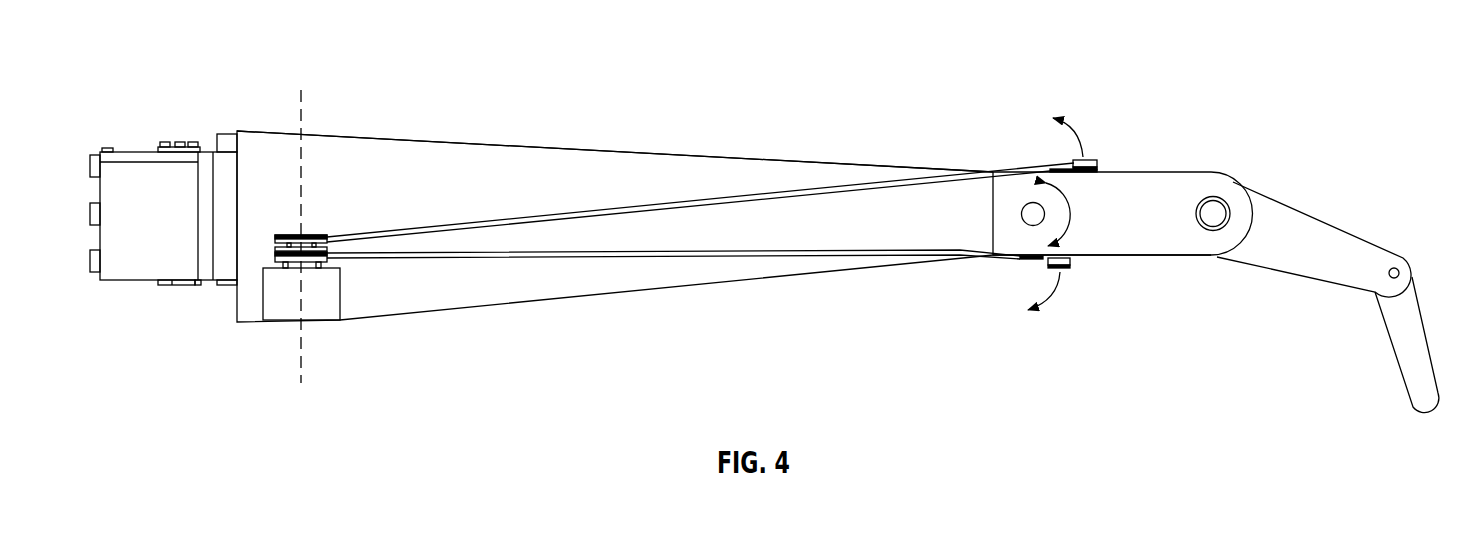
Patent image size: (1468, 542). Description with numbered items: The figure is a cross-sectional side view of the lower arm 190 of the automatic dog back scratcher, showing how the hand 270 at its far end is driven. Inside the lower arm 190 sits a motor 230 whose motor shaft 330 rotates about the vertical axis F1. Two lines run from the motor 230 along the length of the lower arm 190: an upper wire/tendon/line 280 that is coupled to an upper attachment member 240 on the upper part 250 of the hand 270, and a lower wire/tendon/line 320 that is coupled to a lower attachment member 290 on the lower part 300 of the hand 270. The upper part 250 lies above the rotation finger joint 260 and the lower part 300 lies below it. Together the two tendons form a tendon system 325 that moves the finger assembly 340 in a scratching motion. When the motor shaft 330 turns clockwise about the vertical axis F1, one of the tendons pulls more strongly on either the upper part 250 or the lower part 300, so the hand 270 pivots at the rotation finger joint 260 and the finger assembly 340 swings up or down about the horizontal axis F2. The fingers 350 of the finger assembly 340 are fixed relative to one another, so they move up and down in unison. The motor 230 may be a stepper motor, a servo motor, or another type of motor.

The lower arm 190 is at (420, 100).
The tendon system 325 is at (667, 187).
The motor 230 is at (345, 293).
The motor shaft 330 is at (272, 248).
The upper wire/tendon/line 280 is at (815, 193).
The lower wire/tendon/line 320 is at (785, 251).
The upper attachment member 240 is at (1092, 143).
The lower attachment member 290 is at (1066, 275).
The upper part 250 is at (1125, 172).
The rotation finger joint 260 is at (1033, 214).
The lower part 300 is at (1168, 257).
The hand 270 is at (1322, 200).
The finger assembly 340 is at (1387, 232).
The fingers 350 is at (1402, 347).
The vertical axis F1 is at (301, 113).
The horizontal axis F2 is at (1033, 216).